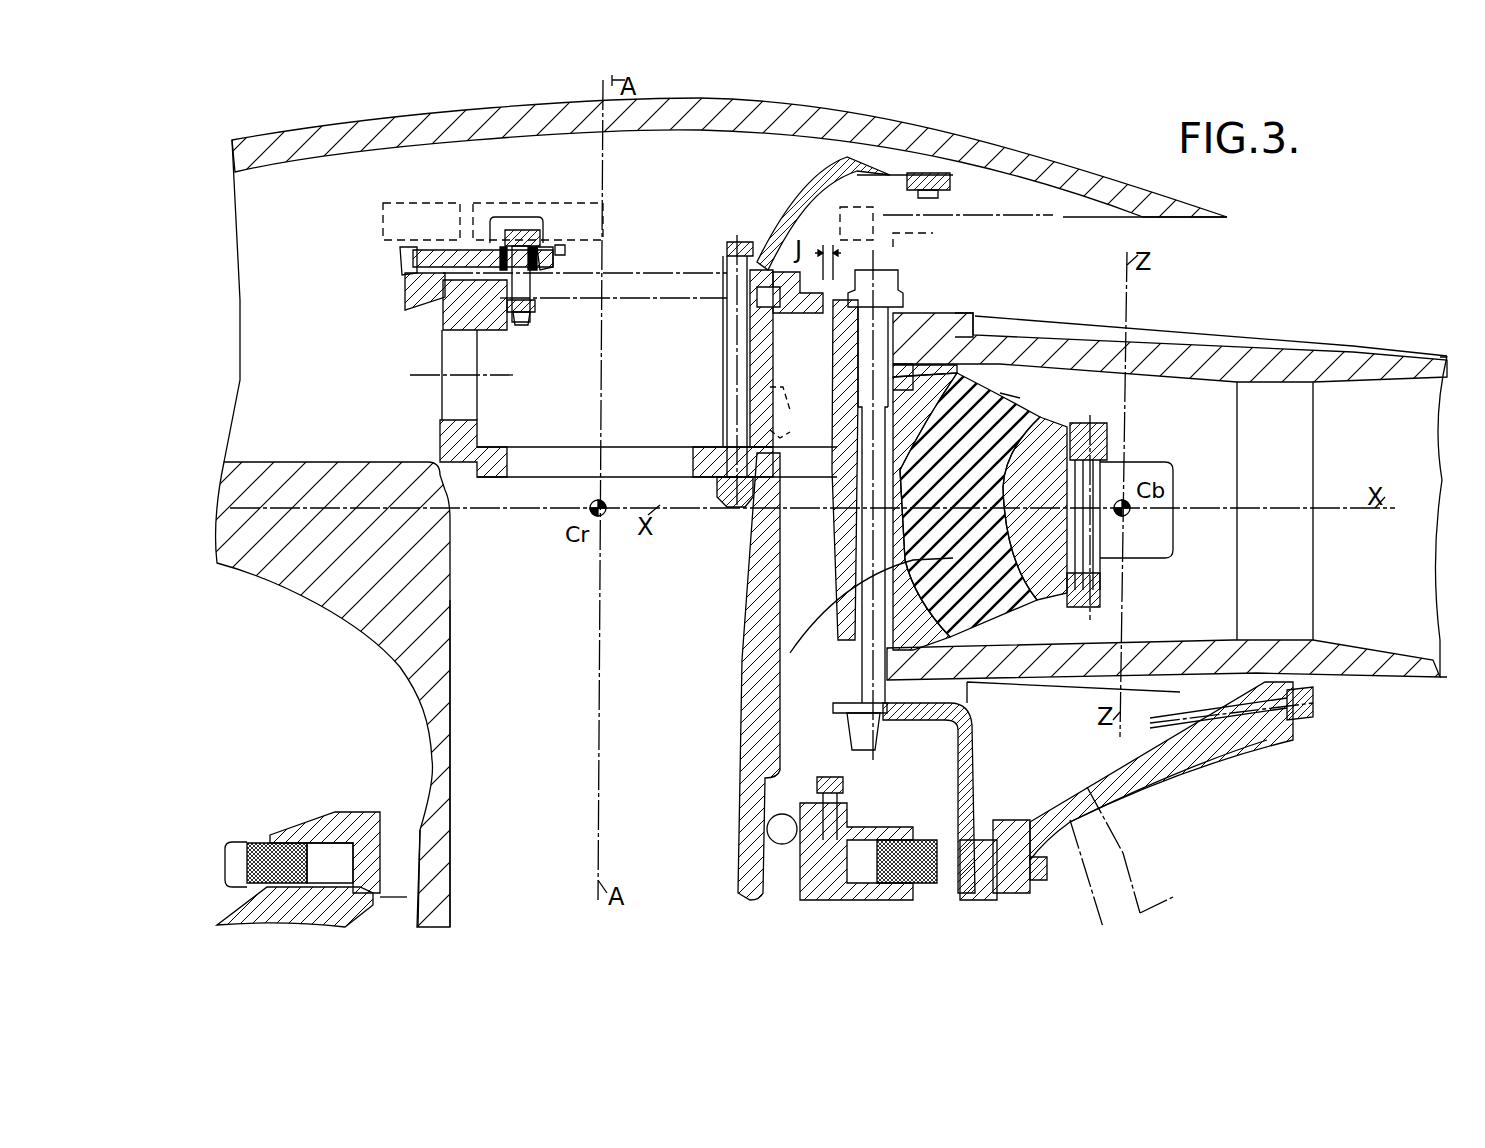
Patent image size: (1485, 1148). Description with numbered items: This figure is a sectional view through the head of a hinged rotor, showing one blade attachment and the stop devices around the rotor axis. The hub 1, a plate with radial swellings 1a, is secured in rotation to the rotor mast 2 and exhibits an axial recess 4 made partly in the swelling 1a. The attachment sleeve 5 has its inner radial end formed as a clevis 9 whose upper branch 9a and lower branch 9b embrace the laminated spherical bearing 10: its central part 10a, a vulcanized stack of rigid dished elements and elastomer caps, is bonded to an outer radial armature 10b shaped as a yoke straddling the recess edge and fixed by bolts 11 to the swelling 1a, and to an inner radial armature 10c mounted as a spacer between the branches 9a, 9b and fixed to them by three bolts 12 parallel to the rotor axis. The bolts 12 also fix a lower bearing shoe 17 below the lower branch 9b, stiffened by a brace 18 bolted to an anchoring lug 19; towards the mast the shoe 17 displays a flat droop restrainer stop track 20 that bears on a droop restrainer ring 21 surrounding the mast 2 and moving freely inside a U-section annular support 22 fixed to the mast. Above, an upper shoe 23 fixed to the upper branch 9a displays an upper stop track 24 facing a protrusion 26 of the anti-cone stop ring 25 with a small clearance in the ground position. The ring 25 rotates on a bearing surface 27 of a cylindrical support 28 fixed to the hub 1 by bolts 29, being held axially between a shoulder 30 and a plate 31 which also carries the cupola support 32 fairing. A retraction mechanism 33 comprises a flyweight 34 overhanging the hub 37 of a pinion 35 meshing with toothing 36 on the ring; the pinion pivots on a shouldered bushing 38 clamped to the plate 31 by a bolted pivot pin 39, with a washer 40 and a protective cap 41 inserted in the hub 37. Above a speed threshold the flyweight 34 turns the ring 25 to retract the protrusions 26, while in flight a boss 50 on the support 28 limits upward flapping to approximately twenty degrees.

The hub 1 is at (330, 490).
The swelling 1a is at (1162, 467).
The rotor mast 2 is at (433, 705).
The axial recess 4 is at (800, 570).
The attachment sleeve 5 is at (1392, 352).
The inner radial clevis 9 is at (1283, 332).
The upper branch 9a is at (958, 310).
The lower branch 9b is at (1050, 692).
The laminated spherical bearing 10 is at (1013, 403).
The central part 10a is at (1007, 392).
The outer radial armature 10b is at (1040, 450).
The inner radial armature 10c is at (920, 387).
The bolts 11 is at (1090, 445).
The bolts 12 is at (855, 668).
The lower bearing shoe 17 is at (973, 887).
The brace 18 is at (1120, 758).
The anchoring lug 19 is at (1290, 740).
The droop restrainer stop track 20 is at (963, 867).
The droop restrainer ring 21 is at (947, 877).
The annular support 22 is at (805, 870).
The upper shoe 23 is at (840, 280).
The upper stop track 24 is at (842, 283).
The anti-cone stop ring 25 is at (767, 323).
The protrusions 26 is at (790, 275).
The bearing surface 27 is at (447, 297).
The support 28 is at (722, 325).
The bolts 29 is at (724, 240).
The shoulder 30 is at (752, 358).
The plate 31 is at (722, 275).
The cupola support 32 is at (848, 163).
The retraction mechanism 33 is at (425, 235).
The flyweight 34 is at (548, 233).
The pinion 35 is at (460, 243).
The toothing 36 is at (405, 257).
The hub 37 is at (545, 255).
The shouldered bushing 38 is at (545, 277).
The bolted pivot pin 39 is at (516, 235).
The washer 40 is at (503, 237).
The cap 41 is at (560, 247).
The boss 50 is at (770, 440).